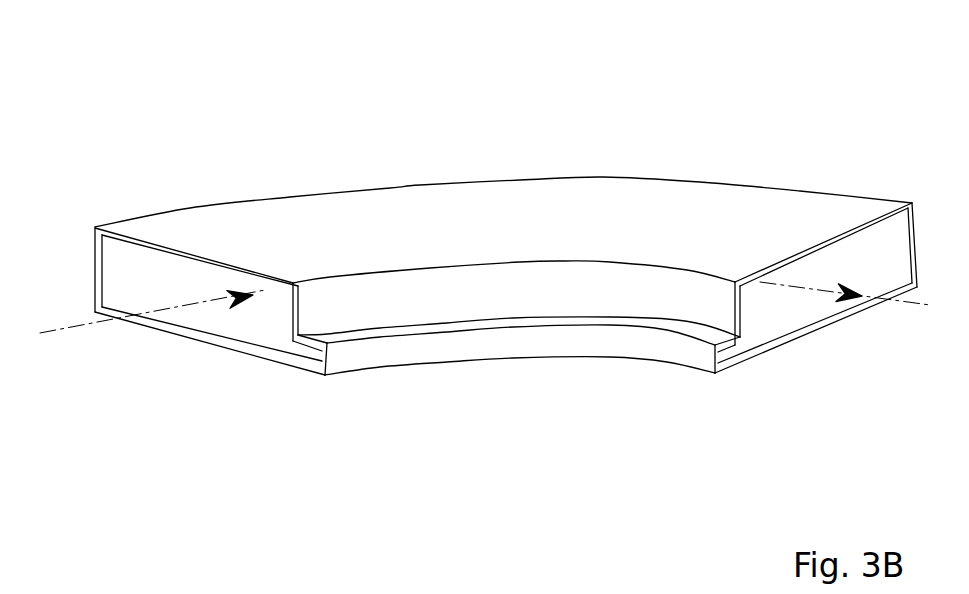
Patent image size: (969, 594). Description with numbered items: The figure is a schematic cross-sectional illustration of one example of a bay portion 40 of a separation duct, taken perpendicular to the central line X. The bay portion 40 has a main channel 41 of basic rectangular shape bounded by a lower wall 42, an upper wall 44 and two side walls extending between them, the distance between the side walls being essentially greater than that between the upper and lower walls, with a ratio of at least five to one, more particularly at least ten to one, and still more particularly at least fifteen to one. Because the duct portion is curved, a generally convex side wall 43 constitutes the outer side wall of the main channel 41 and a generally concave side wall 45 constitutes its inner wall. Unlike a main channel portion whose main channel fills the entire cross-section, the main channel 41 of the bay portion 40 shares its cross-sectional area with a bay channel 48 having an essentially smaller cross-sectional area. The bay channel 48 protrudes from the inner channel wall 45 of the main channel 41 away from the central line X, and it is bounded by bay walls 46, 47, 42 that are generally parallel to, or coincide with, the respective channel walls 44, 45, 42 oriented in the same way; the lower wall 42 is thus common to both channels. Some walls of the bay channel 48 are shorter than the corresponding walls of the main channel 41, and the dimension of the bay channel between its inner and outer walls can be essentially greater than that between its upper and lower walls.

The bay portion 40 is at (450, 107).
The main channel 41 is at (248, 330).
The lower wall 42 is at (252, 355).
The convex side wall 43 is at (97, 293).
The upper wall 44 is at (268, 233).
The concave side wall 45 is at (497, 295).
The bay wall 46 is at (617, 323).
The bay wall 47 is at (403, 343).
The bay channel 48 is at (308, 350).
The central line X is at (93, 320).